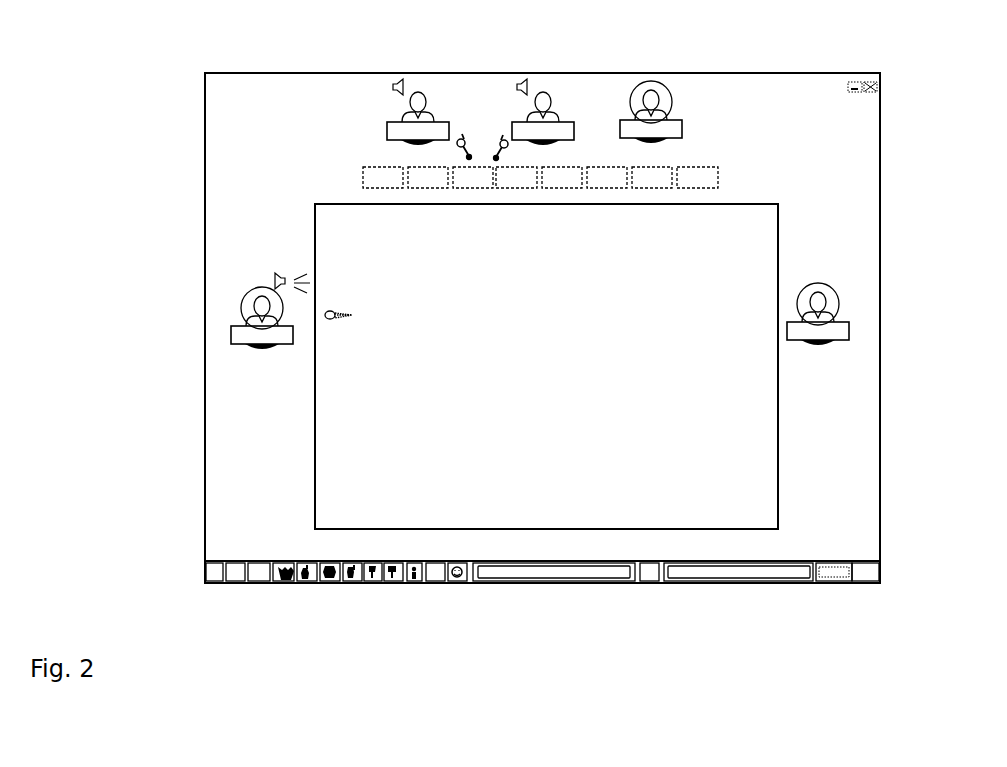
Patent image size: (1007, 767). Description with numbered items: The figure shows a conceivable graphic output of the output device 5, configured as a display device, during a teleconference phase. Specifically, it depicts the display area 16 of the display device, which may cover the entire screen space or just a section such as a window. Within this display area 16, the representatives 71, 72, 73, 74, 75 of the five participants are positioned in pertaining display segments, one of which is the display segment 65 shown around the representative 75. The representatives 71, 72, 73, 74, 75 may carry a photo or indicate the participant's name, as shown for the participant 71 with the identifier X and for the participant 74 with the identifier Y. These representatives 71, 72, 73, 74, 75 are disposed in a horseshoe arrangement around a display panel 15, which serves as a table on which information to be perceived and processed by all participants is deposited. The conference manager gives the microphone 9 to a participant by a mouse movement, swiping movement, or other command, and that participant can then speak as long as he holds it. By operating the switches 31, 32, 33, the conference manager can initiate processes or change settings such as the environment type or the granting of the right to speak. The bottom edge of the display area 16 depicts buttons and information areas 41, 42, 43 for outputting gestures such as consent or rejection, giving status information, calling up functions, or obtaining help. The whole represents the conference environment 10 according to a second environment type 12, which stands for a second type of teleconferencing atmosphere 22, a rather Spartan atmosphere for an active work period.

The output device 5 is at (212, 82).
The microphone 9 is at (358, 316).
The conference environment 10 is at (806, 73).
The second environment type 12 is at (162, 72).
The display panel 15 is at (340, 472).
The display area 16 is at (204, 222).
The second type of teleconferencing atmosphere 22 is at (203, 287).
The switch 31 is at (385, 188).
The switch 32 is at (428, 190).
The switch 33 is at (478, 190).
The buttons and information areas 41 is at (210, 584).
The buttons and information areas 42 is at (290, 584).
The buttons and information areas 43 is at (608, 572).
The display segment 65 is at (832, 284).
The representative 71 is at (547, 93).
The representative 72 is at (676, 94).
The representative 73 is at (433, 96).
The representative 74 is at (243, 313).
The representative 75 is at (843, 303).